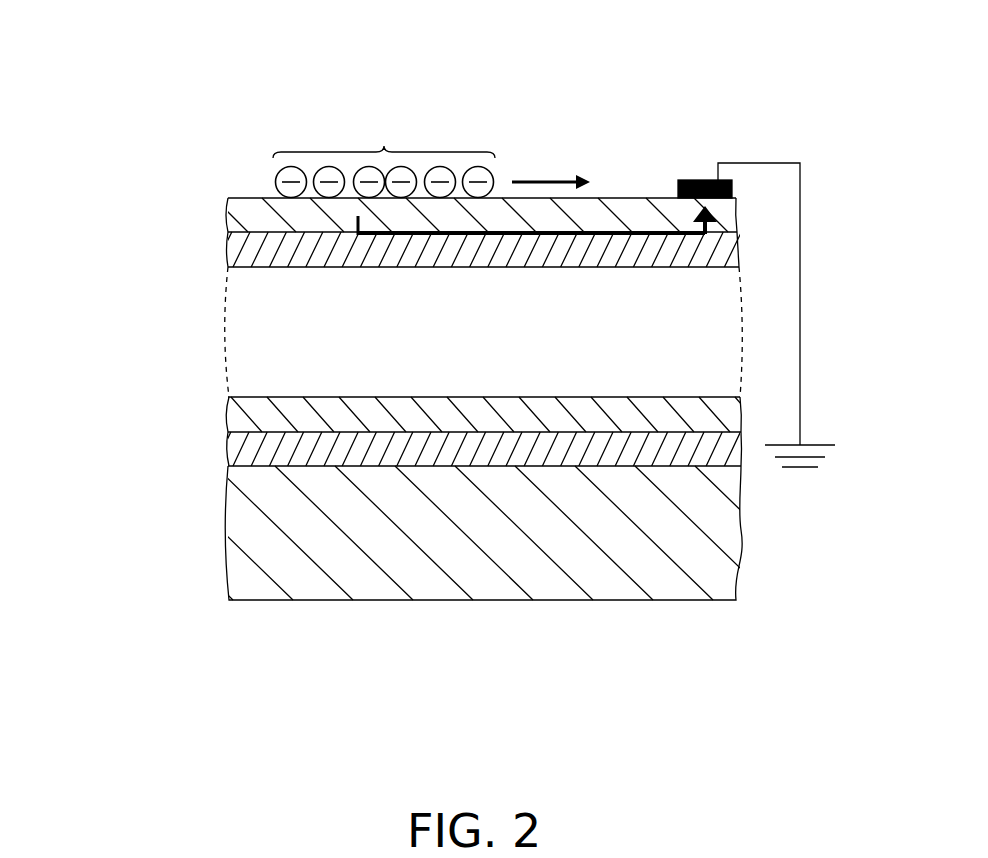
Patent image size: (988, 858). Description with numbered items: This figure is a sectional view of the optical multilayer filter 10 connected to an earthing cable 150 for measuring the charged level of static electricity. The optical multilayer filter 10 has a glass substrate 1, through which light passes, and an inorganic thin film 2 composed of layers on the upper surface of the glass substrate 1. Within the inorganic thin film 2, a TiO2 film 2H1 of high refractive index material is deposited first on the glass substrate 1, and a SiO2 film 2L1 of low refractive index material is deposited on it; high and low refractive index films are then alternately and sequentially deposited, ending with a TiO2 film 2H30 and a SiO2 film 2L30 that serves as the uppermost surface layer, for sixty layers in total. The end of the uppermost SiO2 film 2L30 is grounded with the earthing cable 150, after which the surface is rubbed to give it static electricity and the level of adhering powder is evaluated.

The optical multilayer filter 10 is at (745, 99).
The inorganic thin film 2 is at (122, 197).
The SiO2 film 2L30 is at (228, 222).
The TiO2 film 2H30 is at (228, 252).
The SiO2 film 2L1 is at (228, 418).
The TiO2 film 2H1 is at (228, 450).
The glass substrate 1 is at (228, 531).
The earthing cable 150 is at (800, 300).